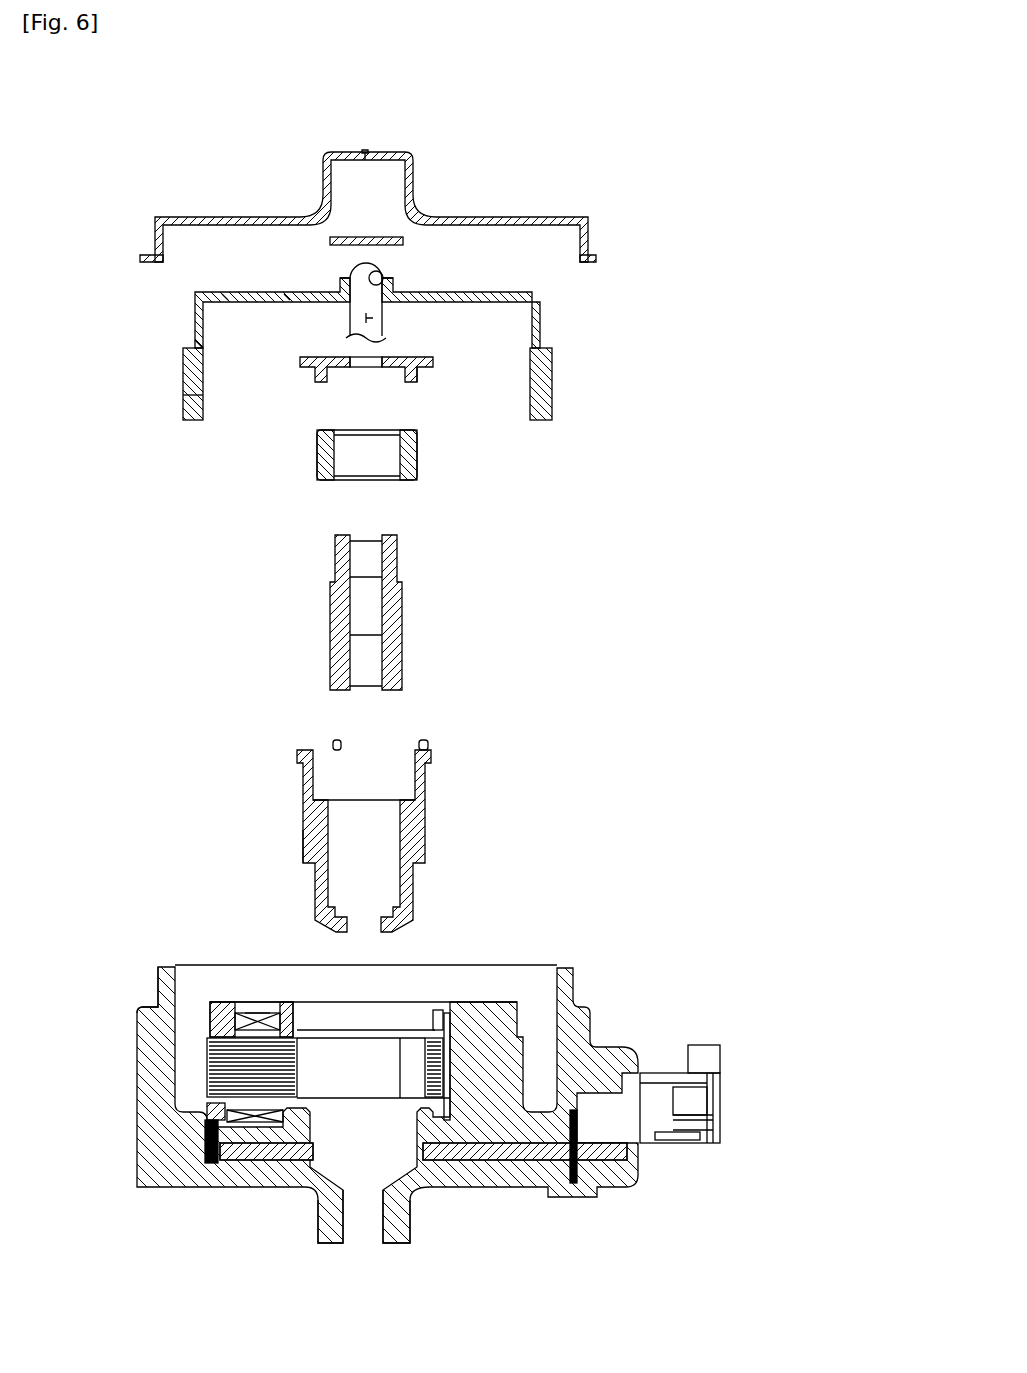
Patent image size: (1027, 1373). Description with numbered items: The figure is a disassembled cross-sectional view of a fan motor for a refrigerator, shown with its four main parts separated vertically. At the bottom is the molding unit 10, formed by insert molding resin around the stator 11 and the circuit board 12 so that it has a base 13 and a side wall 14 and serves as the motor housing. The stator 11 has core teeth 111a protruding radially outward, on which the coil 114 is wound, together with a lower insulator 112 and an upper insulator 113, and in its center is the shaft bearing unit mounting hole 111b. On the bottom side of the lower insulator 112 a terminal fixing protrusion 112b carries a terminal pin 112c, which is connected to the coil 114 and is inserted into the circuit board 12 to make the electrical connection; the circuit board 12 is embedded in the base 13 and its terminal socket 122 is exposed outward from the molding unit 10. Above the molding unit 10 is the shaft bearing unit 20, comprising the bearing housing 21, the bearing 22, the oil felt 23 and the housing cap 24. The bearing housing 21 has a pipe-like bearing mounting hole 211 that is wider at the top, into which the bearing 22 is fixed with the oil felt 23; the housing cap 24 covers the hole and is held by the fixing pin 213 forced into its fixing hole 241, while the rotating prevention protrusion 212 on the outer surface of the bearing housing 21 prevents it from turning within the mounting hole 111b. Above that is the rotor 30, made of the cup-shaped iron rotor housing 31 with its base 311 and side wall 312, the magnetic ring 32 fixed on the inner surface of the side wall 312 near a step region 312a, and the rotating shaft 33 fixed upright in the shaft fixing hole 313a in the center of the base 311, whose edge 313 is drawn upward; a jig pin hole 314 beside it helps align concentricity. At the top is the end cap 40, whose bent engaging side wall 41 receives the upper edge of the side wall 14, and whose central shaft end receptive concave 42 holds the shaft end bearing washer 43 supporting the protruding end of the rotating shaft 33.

The molding unit 10 is at (418, 1079).
The stator 11 is at (299, 1074).
The core teeth 111a is at (206, 1066).
The shaft bearing unit mounting hole 111b is at (301, 1068).
The lower insulator 112 is at (240, 1123).
The terminal fixing protrusion 112b is at (205, 1130).
The terminal pin 112c is at (210, 1168).
The upper insulator 113 is at (216, 1001).
The coil 114 is at (253, 1013).
The circuit board 12 is at (492, 1152).
The terminal socket 122 is at (722, 1105).
The base 13 is at (446, 1177).
The side wall 14 is at (149, 1033).
The shaft bearing unit 20 is at (340, 644).
The bearing housing 21 is at (286, 808).
The bearing mounting hole 211 is at (340, 822).
The rotating prevention protrusion 212 is at (222, 852).
The fixing pin 213 is at (332, 744).
The bearing 22 is at (323, 628).
The oil felt 23 is at (307, 472).
The housing cap 24 is at (350, 395).
The fixing hole 241 is at (424, 370).
The rotor 30 is at (381, 387).
The rotor housing 31 is at (311, 387).
The base 311 is at (226, 297).
The side wall 312 is at (183, 394).
The flange step 312a is at (194, 345).
The edge of the shaft fixing hole 313 is at (393, 284).
The shaft fixing hole 313a is at (381, 272).
The jig pin hole 314 is at (287, 297).
The magnetic ring 32 is at (205, 396).
The rotating shaft 33 is at (423, 290).
The end cap 40 is at (325, 166).
The engaging side wall 41 is at (158, 238).
The shaft end receptive concave 42 is at (365, 157).
The shaft end bearing washer 43 is at (365, 237).